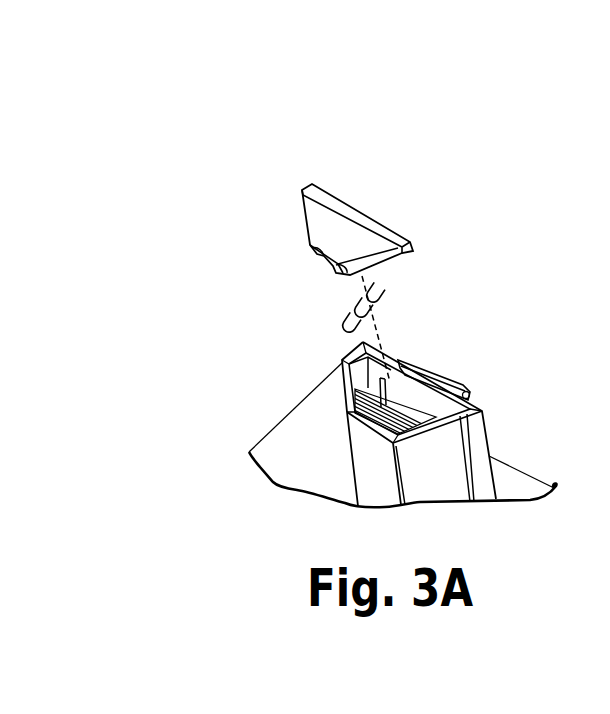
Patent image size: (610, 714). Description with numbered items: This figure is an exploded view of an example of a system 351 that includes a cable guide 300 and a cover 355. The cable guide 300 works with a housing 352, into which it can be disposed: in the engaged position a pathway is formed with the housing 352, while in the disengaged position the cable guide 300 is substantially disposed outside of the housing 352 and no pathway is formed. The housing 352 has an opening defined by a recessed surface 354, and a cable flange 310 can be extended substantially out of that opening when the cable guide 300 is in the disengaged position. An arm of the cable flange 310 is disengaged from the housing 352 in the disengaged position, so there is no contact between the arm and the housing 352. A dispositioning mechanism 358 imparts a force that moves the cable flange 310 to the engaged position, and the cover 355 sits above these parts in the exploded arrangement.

The system 351 is at (258, 100).
The cable guide 300 is at (221, 318).
The cover 355 is at (302, 226).
The dispositioning mechanism 358 is at (345, 311).
The housing 352 is at (322, 359).
The recessed surface 354 is at (351, 385).
The cable flange 310 is at (473, 385).